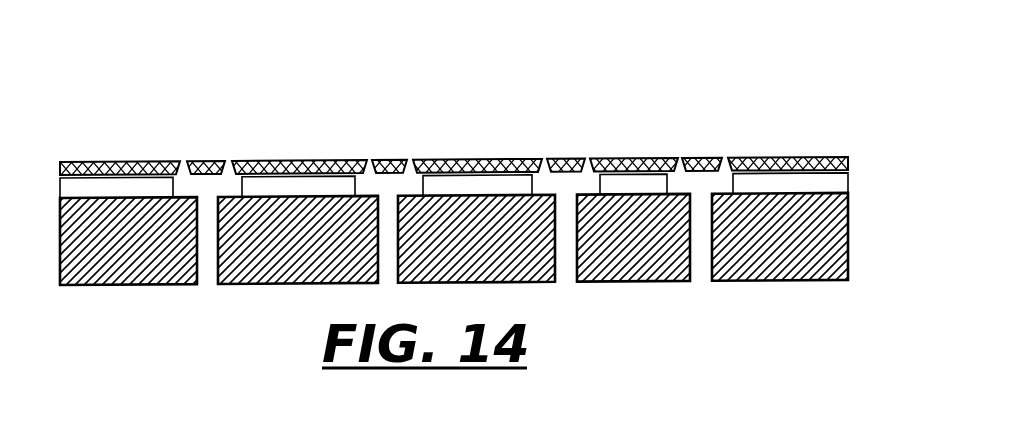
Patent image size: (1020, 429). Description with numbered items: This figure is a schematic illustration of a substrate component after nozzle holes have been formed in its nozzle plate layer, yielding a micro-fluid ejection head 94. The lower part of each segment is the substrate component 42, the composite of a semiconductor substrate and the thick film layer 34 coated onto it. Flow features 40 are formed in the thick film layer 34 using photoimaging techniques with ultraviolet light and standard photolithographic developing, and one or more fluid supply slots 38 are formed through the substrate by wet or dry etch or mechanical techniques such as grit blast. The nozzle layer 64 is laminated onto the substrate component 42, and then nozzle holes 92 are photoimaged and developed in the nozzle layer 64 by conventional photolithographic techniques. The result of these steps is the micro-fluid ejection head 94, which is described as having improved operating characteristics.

The thick film layer 34 is at (452, 183).
The fluid supply slot 38 is at (209, 273).
The flow features 40 is at (362, 178).
The substrate component 42 is at (500, 241).
The nozzle layer 64 is at (197, 162).
The nozzle holes 92 is at (723, 155).
The micro-fluid ejection head 94 is at (812, 127).